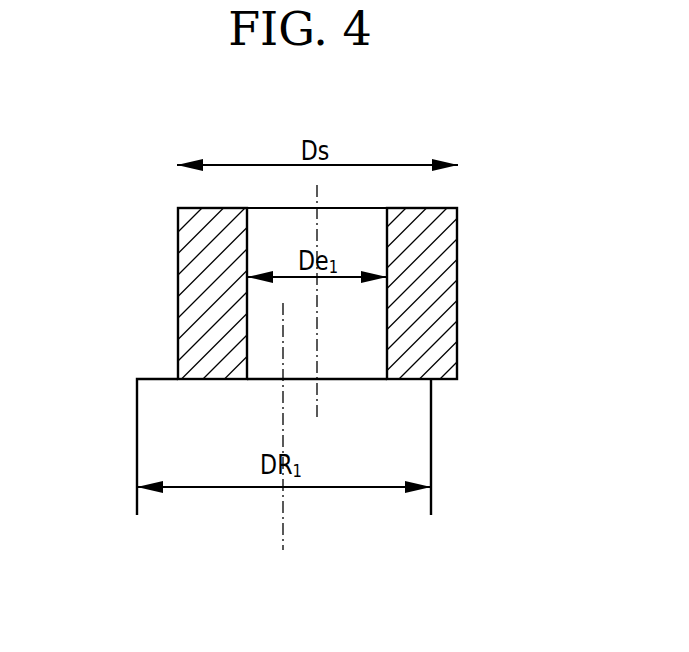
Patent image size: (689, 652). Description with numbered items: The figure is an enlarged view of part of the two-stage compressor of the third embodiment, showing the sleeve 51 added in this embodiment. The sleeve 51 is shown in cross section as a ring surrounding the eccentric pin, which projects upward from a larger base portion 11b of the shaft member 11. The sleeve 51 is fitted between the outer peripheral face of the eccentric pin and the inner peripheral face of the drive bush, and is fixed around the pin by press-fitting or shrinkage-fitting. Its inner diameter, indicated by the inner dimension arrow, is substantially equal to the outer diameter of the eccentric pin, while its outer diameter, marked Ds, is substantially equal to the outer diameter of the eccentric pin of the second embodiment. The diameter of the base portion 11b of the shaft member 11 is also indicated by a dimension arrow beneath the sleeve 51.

The sleeve 51 is at (193, 285).
The rotor hub 11 is at (369, 315).
The flange portion 11b is at (399, 421).